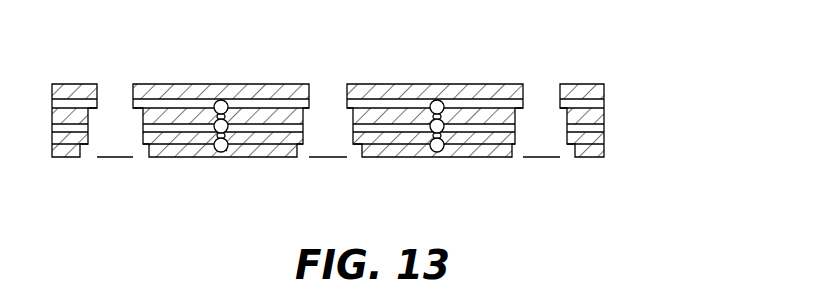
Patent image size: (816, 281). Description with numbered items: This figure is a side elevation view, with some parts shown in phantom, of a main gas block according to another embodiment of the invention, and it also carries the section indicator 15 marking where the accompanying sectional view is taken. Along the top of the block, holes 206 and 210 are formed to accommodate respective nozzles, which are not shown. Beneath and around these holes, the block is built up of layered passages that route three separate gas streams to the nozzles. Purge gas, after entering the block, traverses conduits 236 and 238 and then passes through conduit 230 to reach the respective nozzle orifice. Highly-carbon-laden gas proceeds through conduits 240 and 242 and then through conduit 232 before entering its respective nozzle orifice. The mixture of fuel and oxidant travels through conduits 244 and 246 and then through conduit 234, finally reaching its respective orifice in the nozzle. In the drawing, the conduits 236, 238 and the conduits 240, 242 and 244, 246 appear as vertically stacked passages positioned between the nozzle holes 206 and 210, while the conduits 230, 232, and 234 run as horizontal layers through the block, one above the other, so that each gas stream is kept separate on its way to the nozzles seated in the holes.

The hole 206 is at (547, 83).
The hole 210 is at (112, 93).
The conduit 230 is at (604, 98).
The conduit 232 is at (604, 121).
The conduit 234 is at (604, 142).
The conduit 236 is at (451, 128).
The conduit 238 is at (215, 124).
The conduit 240 is at (446, 127).
The conduit 242 is at (216, 148).
The conduit 244 is at (433, 154).
The conduit 246 is at (226, 150).
The section line 15- 15 is at (327, 73).